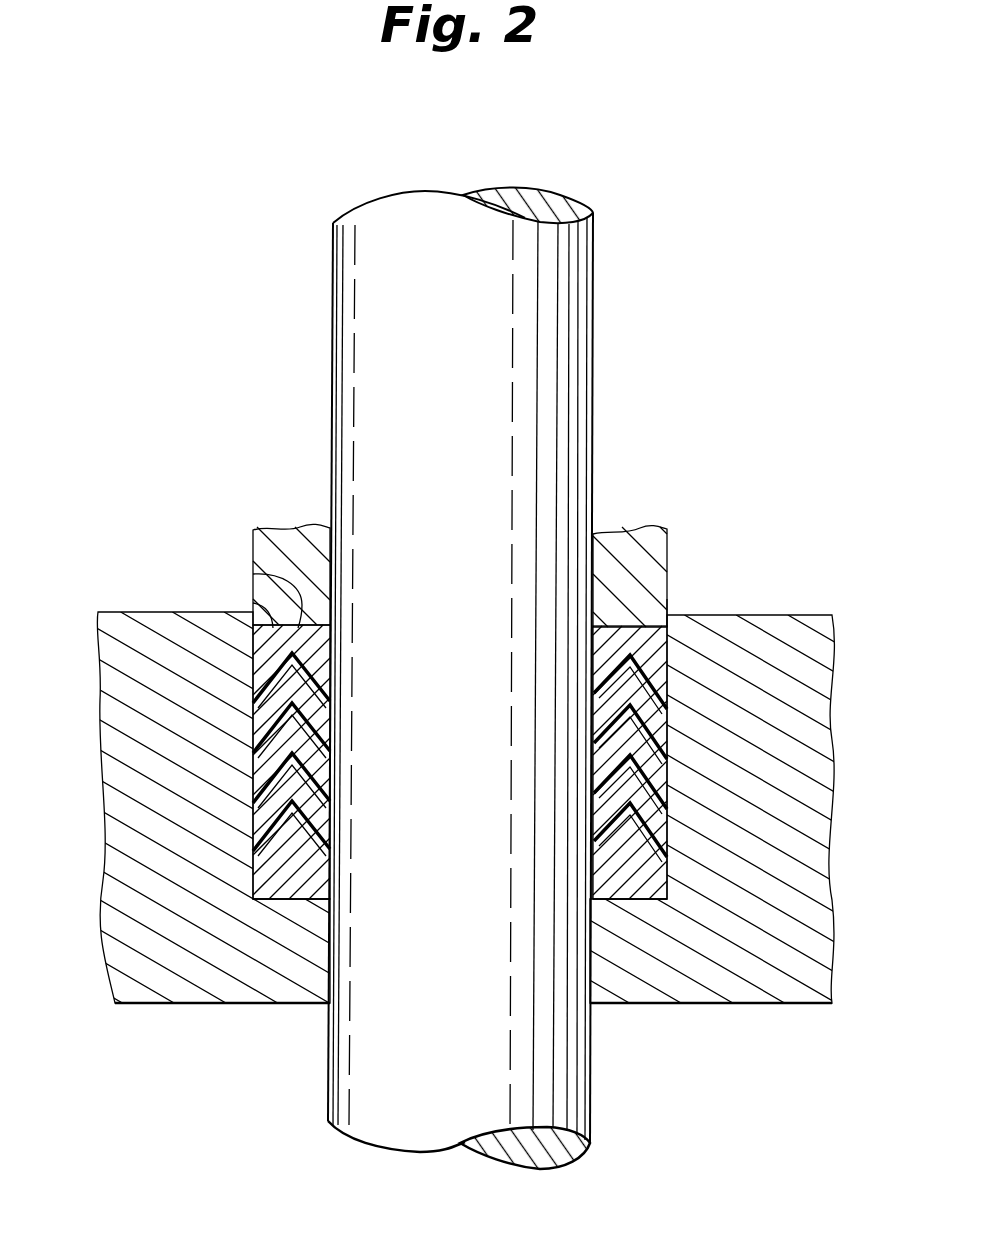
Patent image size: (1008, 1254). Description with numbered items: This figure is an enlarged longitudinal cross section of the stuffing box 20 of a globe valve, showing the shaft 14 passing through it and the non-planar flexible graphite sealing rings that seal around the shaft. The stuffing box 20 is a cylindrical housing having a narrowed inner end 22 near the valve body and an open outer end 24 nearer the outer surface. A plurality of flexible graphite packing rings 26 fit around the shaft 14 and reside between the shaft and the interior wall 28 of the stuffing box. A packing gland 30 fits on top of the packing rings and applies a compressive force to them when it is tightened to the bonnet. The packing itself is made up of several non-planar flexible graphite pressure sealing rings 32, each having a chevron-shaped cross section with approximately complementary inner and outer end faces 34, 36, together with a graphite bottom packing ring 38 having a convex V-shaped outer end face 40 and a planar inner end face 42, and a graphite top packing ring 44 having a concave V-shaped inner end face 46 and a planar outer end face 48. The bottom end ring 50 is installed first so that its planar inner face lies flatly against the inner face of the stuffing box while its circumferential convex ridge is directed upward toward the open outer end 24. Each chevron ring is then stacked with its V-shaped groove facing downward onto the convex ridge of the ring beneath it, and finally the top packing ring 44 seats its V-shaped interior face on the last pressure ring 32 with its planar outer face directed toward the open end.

The shaft 14 is at (572, 1077).
The stuffing box 20 is at (300, 973).
The narrowed inner end 22 is at (592, 903).
The open outer end 24 is at (667, 615).
The flexible graphite packing rings 26 is at (240, 826).
The interior wall 28 is at (256, 604).
The packing gland 30 is at (668, 543).
The non-planar flexible graphite pressure sealing rings 32 is at (636, 720).
The inner end face 34 is at (640, 778).
The outer end face 36 is at (638, 728).
The graphite bottom packing ring 38 is at (660, 875).
The convex V-shaped outer end face 40 is at (640, 823).
The planar inner end face 42 is at (640, 918).
The graphite top packing ring 44 is at (272, 655).
The concave V-shaped inner end face 46 is at (272, 675).
The planar outer end face 48 is at (256, 574).
The end ring 50 is at (278, 900).